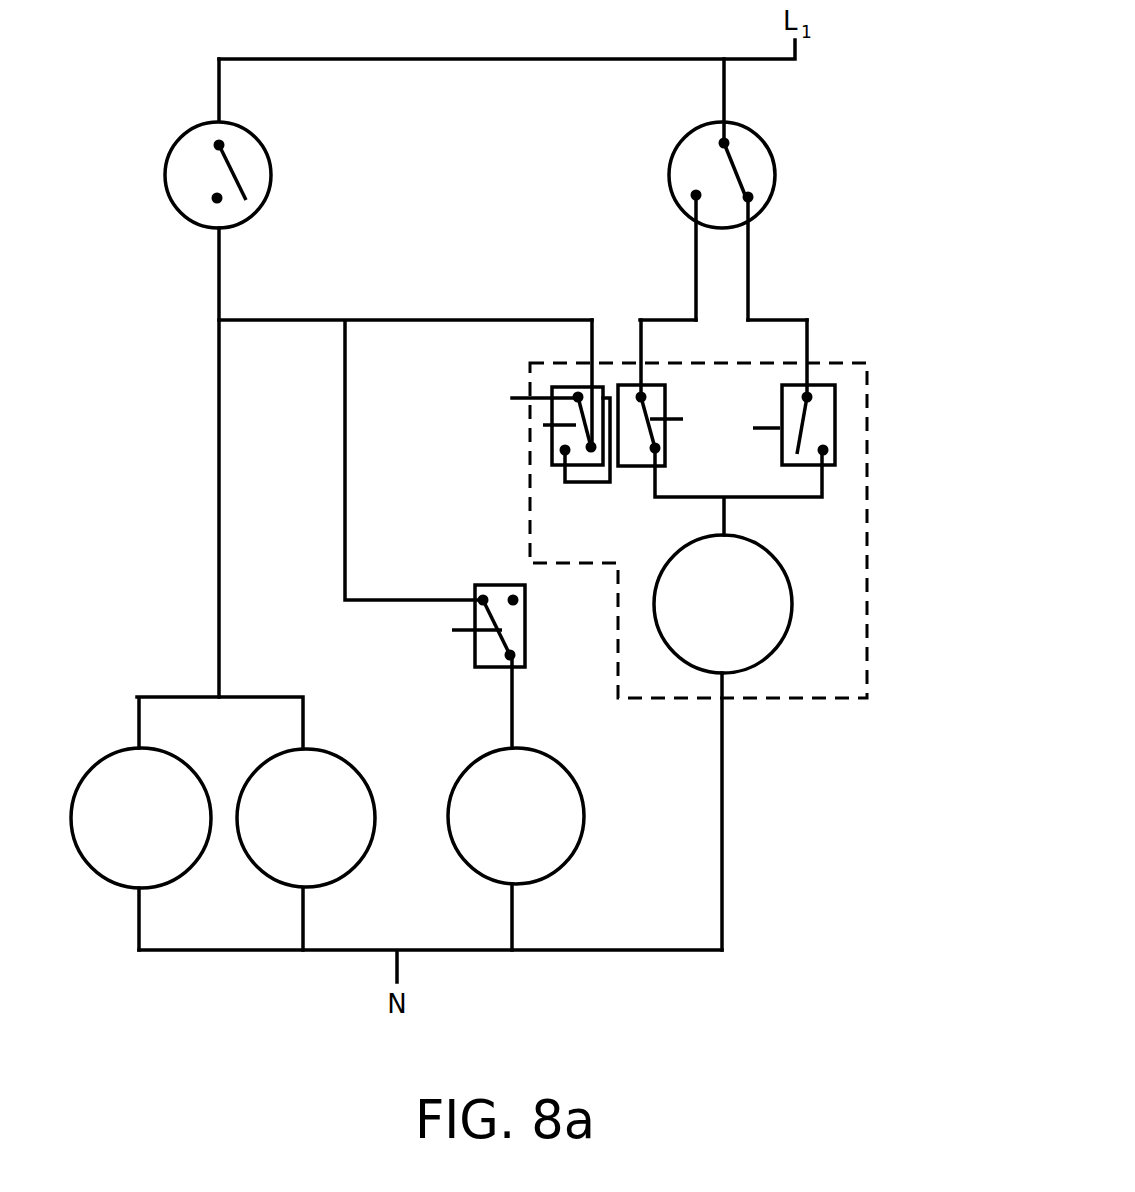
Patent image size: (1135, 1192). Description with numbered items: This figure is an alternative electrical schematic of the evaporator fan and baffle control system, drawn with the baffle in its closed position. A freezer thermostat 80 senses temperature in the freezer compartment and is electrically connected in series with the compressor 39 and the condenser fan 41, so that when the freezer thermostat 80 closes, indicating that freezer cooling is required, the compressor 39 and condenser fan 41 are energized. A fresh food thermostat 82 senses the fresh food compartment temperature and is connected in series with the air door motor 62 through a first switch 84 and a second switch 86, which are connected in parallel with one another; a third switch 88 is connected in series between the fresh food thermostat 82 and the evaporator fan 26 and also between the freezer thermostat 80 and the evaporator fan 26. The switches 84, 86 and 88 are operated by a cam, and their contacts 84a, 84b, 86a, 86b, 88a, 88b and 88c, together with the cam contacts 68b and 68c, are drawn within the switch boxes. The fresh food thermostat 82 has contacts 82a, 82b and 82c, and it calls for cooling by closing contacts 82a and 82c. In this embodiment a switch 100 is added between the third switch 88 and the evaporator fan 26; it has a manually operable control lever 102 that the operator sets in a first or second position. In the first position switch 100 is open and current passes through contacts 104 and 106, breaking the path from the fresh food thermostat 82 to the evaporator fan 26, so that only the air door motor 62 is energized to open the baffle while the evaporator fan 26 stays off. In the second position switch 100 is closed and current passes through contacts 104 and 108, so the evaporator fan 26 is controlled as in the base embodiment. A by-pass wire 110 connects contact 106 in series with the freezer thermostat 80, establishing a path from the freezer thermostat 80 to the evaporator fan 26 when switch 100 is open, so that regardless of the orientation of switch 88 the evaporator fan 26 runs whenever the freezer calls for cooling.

The evaporator fan 26 is at (553, 877).
The compressor 39 is at (95, 772).
The condenser fan 41 is at (350, 762).
The air door motor 62 is at (788, 622).
The thermostat contact 68b is at (677, 418).
The thermostat contact 68c is at (543, 426).
The freezer thermostat 80 is at (258, 136).
The fresh food thermostat 82 is at (777, 195).
The contact 82a is at (718, 140).
The selector switch contact 82b is at (752, 192).
The contact 82c is at (693, 200).
The first switch 84 is at (837, 415).
The relay switch contact 84a is at (812, 395).
The relay switch contact 84b is at (837, 448).
The second switch 86 is at (667, 447).
The relay switch contact 86a is at (643, 395).
The relay switch contact 86b is at (655, 452).
The third switch 88 is at (552, 389).
The relay switch common contact 88a is at (592, 452).
The relay switch contact 88b is at (577, 395).
The relay switch contact 88c is at (565, 452).
The switch 100 is at (474, 652).
The control lever 102 is at (452, 630).
The contact 104 is at (493, 667).
The contact 106 is at (482, 592).
The contact 108 is at (523, 598).
The by-pass wire 110 is at (344, 472).